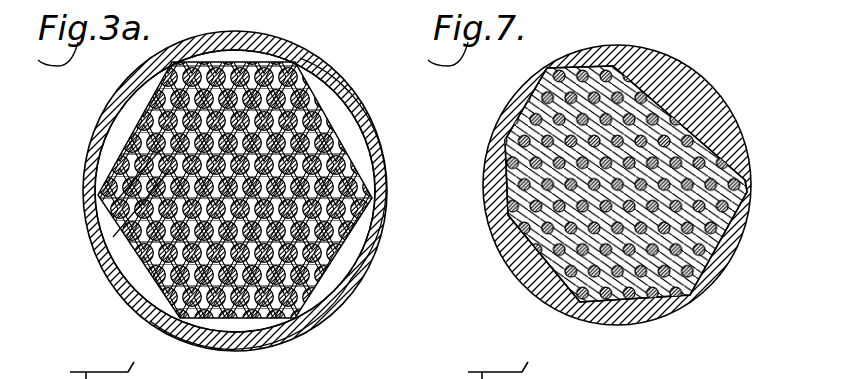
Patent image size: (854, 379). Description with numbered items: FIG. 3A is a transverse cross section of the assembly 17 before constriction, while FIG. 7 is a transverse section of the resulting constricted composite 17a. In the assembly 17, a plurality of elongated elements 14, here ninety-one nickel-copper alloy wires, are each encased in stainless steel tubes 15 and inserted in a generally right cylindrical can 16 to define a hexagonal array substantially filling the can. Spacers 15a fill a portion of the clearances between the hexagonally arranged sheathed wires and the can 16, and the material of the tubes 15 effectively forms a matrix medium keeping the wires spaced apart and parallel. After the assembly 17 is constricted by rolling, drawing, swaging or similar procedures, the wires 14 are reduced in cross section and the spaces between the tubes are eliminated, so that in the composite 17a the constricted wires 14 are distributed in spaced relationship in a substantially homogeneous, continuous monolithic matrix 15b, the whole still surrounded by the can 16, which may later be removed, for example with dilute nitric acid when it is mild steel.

In FIG. 3A, the elongated elements 14 is at (98, 195).
In FIG. 7, the elongated elements 14 is at (510, 163).
In FIG. 3A, the tubes 15 is at (113, 238).
In FIG. 3A, the spacers 15a is at (125, 289).
In FIG. 7, the monolithic matrix 15b is at (505, 221).
In FIG. 3A, the can 16 is at (100, 264).
In FIG. 7, the can 16 is at (516, 100).
In FIG. 3A, the assembly 17 is at (309, 50).
In FIG. 7, the constricted composite 17a is at (664, 45).